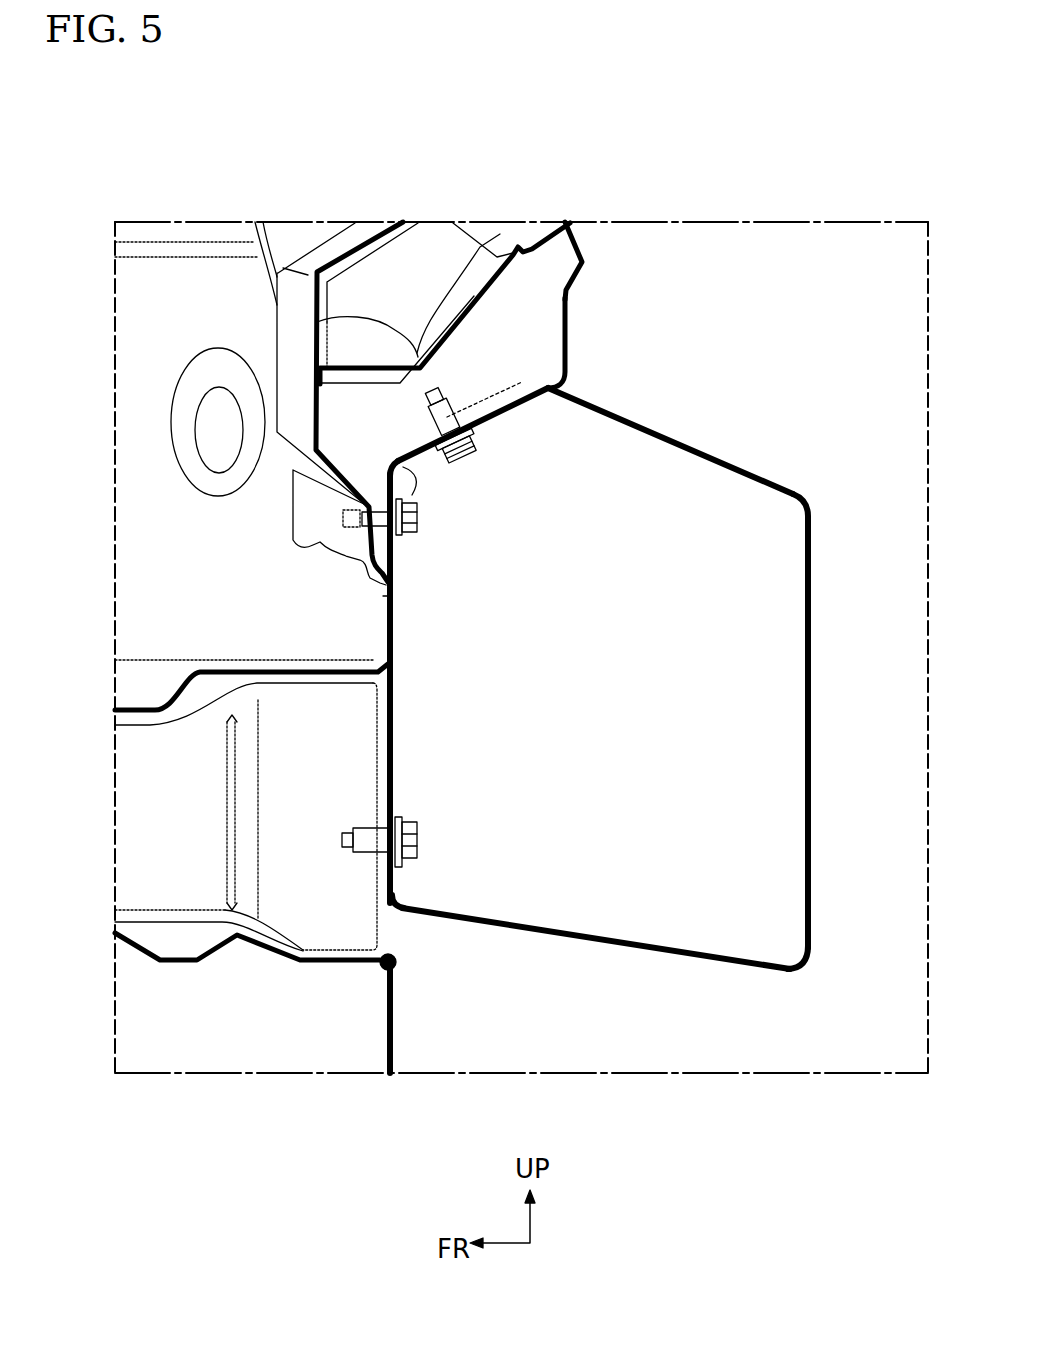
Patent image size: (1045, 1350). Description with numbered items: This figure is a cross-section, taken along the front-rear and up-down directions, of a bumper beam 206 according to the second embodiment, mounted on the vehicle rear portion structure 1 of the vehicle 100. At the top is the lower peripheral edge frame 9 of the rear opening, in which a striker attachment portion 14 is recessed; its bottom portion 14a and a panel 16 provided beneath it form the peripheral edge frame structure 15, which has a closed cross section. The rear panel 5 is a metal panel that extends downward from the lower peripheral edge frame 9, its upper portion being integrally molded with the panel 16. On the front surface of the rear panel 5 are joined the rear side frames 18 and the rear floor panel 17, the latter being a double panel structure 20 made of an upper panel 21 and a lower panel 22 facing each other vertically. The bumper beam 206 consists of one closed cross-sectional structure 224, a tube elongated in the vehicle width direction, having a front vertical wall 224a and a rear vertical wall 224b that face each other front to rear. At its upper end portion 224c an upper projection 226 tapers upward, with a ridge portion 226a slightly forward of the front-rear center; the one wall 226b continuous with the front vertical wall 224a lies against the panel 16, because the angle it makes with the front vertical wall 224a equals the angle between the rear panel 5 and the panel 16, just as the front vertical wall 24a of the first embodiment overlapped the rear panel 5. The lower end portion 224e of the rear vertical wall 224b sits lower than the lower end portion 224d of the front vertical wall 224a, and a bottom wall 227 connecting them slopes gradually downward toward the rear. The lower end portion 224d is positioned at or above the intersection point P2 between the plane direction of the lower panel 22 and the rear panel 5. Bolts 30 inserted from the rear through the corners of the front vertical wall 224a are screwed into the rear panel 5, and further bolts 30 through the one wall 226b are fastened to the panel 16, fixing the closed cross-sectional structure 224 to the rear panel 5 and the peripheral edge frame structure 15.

The vehicle rear portion structure 1 is at (788, 332).
The vehicle 100 is at (268, 208).
The lower peripheral edge frame 9 is at (537, 240).
The striker attachment portion 14 is at (455, 345).
The bottom portion 14a is at (428, 330).
The peripheral edge frame structure 15 is at (592, 248).
The panel 16 is at (567, 317).
The bumper beam 206 is at (750, 438).
The closed cross-sectional structure 224 is at (672, 424).
The front vertical wall 224a is at (397, 671).
The rear vertical wall 224b is at (812, 760).
The upper end portion 224c is at (393, 463).
The lower end portion 224d is at (395, 912).
The lower end portion 224e is at (805, 968).
The upper projection 226 is at (595, 395).
The ridge portion 226a is at (547, 385).
The one wall 226b is at (473, 413).
The bottom wall 227 is at (625, 952).
The bolts 30 is at (474, 462).
The intersection point P2 is at (396, 964).
The rear panel 5 is at (393, 1045).
The upper panel 21 is at (225, 666).
The front vertical wall 24a is at (383, 597).
The lower panel 22 is at (302, 963).
The rear side frames 18 is at (153, 905).
The rear floor panel 17 is at (118, 978).
The double panel structure 20 is at (224, 1014).